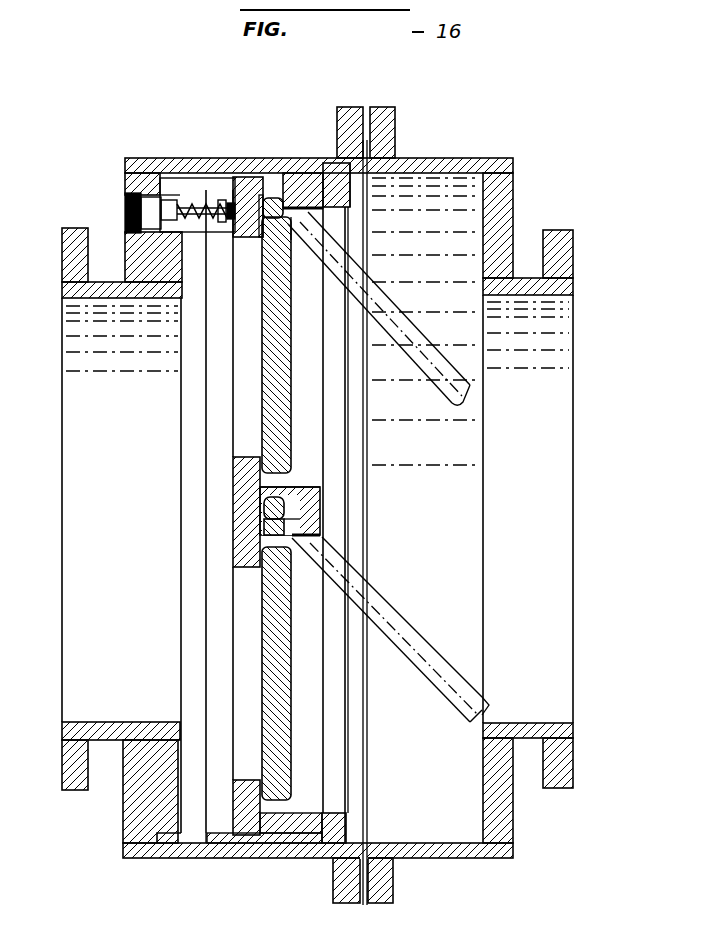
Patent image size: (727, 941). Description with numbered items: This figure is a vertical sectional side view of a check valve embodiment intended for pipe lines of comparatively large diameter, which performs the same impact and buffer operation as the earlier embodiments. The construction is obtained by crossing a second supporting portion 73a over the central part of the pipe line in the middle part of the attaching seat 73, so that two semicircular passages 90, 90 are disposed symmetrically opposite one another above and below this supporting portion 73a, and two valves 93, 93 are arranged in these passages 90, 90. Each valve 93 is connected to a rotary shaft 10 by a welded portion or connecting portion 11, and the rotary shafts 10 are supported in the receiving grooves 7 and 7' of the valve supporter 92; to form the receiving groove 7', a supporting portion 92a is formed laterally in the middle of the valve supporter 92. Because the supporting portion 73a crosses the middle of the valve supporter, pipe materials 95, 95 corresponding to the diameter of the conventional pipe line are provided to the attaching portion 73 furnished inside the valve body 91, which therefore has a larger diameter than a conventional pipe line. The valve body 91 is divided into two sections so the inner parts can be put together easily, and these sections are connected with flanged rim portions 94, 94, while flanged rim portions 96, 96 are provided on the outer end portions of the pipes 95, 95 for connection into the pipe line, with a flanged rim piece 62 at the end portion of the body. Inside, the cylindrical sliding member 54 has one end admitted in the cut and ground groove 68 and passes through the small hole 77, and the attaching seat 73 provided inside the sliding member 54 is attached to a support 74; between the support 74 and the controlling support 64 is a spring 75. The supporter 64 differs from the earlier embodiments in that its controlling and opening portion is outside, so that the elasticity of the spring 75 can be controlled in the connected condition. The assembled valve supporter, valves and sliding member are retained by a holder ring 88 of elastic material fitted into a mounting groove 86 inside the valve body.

The receiving groove 7 is at (273, 150).
The receiving groove 7' is at (332, 508).
The rotary shaft 10 is at (276, 196).
The connecting portion 11 is at (293, 241).
The sliding member 54 is at (232, 186).
The flanged rim piece 62 is at (134, 256).
The controlling support 64 is at (128, 200).
The groove 68 is at (176, 192).
The attaching seat 73 is at (247, 190).
The second supporting portion 73a is at (243, 512).
The support 74 is at (222, 222).
The spring 75 is at (198, 192).
The small hole 77 is at (151, 180).
The mounting groove 86 is at (330, 852).
The holder ring 88 is at (338, 833).
The semicircular passage 90 is at (240, 368).
The valve body 91 is at (445, 165).
The valve supporter 92 is at (308, 186).
The supporting portion 92a is at (320, 488).
The valve 93 is at (288, 387).
The flanged rim portion 94 is at (347, 106).
The pipe material 95 is at (118, 304).
The flanged rim portion 96 is at (72, 258).